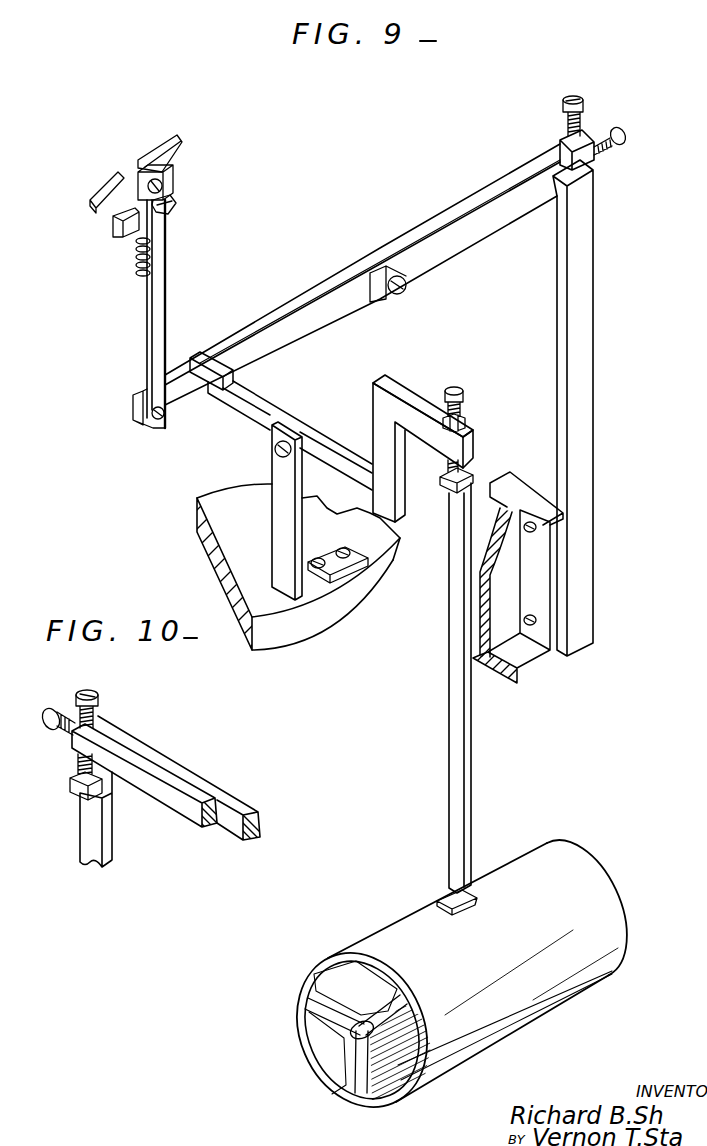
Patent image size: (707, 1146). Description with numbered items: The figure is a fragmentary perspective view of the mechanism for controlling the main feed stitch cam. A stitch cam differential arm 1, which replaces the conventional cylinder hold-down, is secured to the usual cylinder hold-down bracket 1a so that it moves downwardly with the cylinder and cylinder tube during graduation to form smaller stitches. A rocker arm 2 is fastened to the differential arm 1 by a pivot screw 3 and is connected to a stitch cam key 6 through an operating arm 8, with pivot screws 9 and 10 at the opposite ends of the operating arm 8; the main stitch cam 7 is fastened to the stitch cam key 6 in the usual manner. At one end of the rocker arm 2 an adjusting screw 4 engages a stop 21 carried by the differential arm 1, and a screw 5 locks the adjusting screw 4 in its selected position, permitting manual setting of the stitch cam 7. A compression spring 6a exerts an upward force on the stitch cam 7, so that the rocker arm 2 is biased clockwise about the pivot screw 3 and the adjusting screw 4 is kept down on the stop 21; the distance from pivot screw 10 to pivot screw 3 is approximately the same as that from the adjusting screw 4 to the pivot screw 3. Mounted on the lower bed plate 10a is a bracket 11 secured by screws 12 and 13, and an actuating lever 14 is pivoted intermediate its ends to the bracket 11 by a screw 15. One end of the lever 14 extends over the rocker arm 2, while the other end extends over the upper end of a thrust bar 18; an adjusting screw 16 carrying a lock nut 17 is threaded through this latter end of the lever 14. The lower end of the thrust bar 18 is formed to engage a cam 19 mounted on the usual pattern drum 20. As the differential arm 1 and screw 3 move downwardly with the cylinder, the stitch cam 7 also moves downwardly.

In FIG. 9, the stitch cam differential arm 1 is at (592, 328).
In FIG. 10, the stitch cam differential arm 1 is at (86, 840).
In FIG. 9, the cylinder hold-down bracket 1a is at (534, 668).
In FIG. 9, the rocker arm 2 is at (282, 312).
In FIG. 10, the rocker arm 2 is at (182, 804).
In FIG. 9, the pivot screw 3 is at (406, 285).
In FIG. 9, the adjusting screw 4 is at (576, 99).
In FIG. 10, the adjusting screw 4 is at (89, 690).
In FIG. 9, the screw 5 is at (624, 128).
In FIG. 10, the screw 5 is at (48, 709).
In FIG. 9, the stitch cam key 6 is at (164, 172).
In FIG. 9, the compression spring 6a is at (134, 258).
In FIG. 9, the main stitch cam 7 is at (165, 148).
In FIG. 9, the operating arm 8 is at (150, 316).
In FIG. 9, the pivot screw 9 is at (168, 212).
In FIG. 9, the pivot screw 10 is at (160, 426).
In FIG. 9, the lower bed plate 10a is at (265, 640).
In FIG. 9, the bracket 11 is at (283, 521).
In FIG. 9, the screw 12 is at (328, 578).
In FIG. 9, the screw 13 is at (334, 548).
In FIG. 9, the actuating lever 14 is at (257, 420).
In FIG. 9, the screw 15 is at (275, 457).
In FIG. 9, the adjusting screw 16 is at (455, 388).
In FIG. 9, the lock nut 17 is at (464, 424).
In FIG. 9, the thrust bar 18 is at (448, 684).
In FIG. 9, the cam 19 is at (479, 899).
In FIG. 9, the pattern drum 20 is at (589, 888).
In FIG. 10, the stop 21 is at (72, 786).